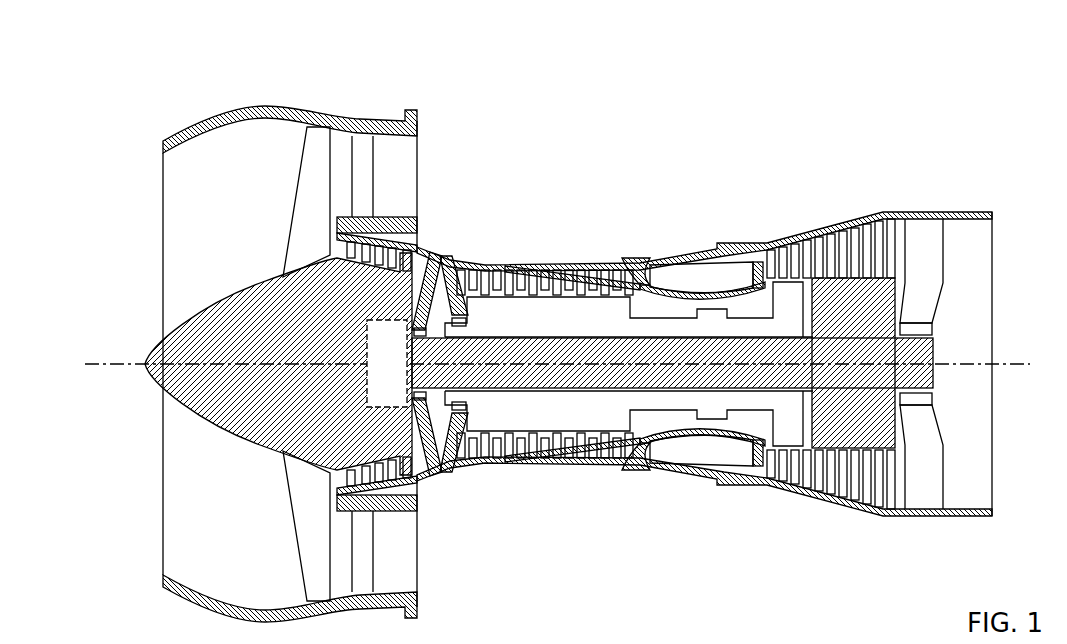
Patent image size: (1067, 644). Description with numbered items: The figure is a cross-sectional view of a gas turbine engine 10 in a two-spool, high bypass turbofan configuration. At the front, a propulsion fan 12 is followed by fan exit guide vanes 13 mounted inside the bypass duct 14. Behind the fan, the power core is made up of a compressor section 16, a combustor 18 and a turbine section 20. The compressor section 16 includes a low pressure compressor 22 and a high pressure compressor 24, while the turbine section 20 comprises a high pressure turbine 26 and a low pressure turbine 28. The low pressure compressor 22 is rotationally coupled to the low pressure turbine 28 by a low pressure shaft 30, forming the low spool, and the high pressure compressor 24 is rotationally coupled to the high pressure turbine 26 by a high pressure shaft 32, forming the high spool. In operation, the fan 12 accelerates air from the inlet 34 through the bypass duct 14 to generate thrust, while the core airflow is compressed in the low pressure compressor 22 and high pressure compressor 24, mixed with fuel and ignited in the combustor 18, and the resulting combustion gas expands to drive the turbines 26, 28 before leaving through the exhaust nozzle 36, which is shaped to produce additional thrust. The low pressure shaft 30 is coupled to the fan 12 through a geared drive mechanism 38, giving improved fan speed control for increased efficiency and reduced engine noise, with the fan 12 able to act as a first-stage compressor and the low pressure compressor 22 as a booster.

The gas turbine engine 10 is at (143, 76).
The propulsion fan 12 is at (313, 215).
The fan exit guide vanes 13 is at (362, 147).
The bypass duct 14 is at (398, 177).
The compressor section 16 is at (633, 541).
The combustor 18 is at (695, 278).
The turbine section 20 is at (743, 560).
The low pressure compressor 22 is at (418, 483).
The high pressure compressor 24 is at (518, 476).
The high pressure turbine 26 is at (780, 486).
The low pressure turbine 28 is at (843, 510).
The low pressure shaft 30 is at (680, 382).
The high pressure shaft 32 is at (653, 402).
The inlet 34 is at (173, 232).
The exhaust nozzle 36 is at (965, 280).
The geared drive mechanism 38 is at (372, 377).